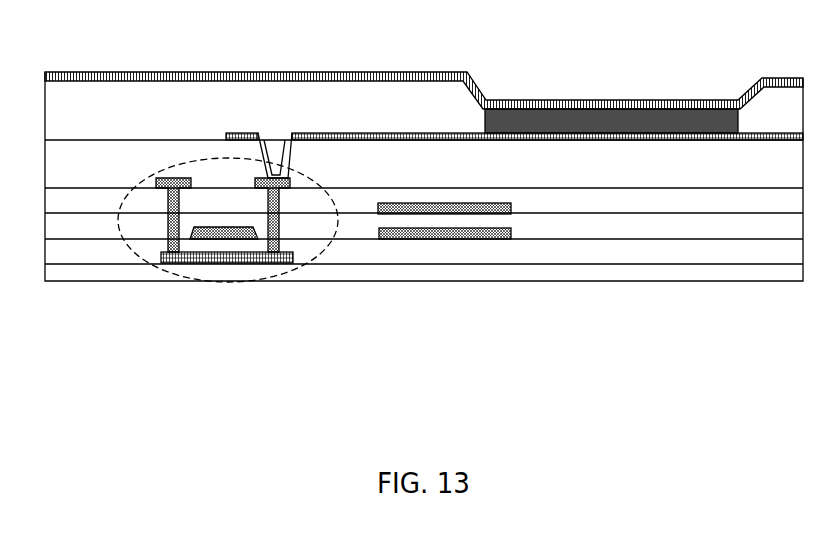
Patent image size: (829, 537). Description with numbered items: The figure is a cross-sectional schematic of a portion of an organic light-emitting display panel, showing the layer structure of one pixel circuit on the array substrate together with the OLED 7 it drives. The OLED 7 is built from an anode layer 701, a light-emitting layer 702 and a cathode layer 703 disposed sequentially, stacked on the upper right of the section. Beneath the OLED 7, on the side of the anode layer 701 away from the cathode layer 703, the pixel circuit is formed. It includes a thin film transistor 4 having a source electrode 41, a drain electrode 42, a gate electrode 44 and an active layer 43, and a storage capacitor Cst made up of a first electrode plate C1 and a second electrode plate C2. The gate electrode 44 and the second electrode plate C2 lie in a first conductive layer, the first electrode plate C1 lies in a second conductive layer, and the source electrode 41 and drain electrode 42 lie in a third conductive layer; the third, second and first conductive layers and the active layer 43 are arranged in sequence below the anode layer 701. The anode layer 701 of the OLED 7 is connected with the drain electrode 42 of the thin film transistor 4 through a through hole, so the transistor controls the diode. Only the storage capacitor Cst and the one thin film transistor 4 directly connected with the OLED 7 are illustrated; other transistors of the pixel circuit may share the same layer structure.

The thin film transistor 4 is at (216, 194).
The source electrode 41 is at (172, 183).
The drain electrode 42 is at (275, 183).
The active layer 43 is at (203, 262).
The gate electrode 44 is at (237, 238).
The OLED 7 is at (424, 97).
The anode layer 701 is at (640, 52).
The light-emitting layer 702 is at (578, 120).
The cathode layer 703 is at (635, 103).
The first electrode plate C1 is at (499, 212).
The second electrode plate C2 is at (437, 238).
The storage capacitor Cst is at (452, 299).